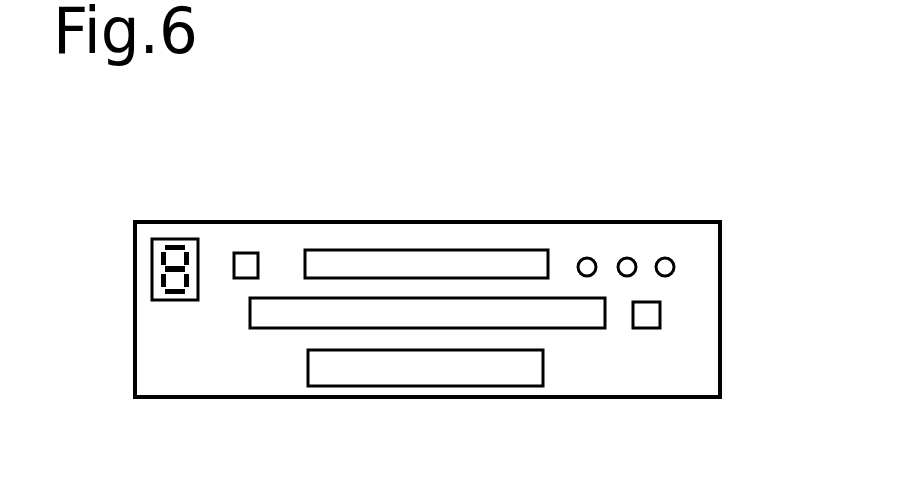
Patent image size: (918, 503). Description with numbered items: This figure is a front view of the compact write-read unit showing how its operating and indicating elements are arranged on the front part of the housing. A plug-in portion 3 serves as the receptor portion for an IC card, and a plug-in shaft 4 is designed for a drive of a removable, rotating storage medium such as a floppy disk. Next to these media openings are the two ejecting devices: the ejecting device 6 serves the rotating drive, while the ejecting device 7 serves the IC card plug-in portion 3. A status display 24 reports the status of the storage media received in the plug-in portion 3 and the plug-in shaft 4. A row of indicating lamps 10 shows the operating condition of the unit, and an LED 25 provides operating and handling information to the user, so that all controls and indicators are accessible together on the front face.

The status display 24 is at (152, 240).
The ejecting device 7 is at (250, 262).
The plug-in portion 3 is at (510, 263).
The indicating lamps 10 is at (625, 258).
The ejecting device 6 is at (652, 314).
The plug-in shaft 4 is at (577, 315).
The LED 25 is at (512, 373).